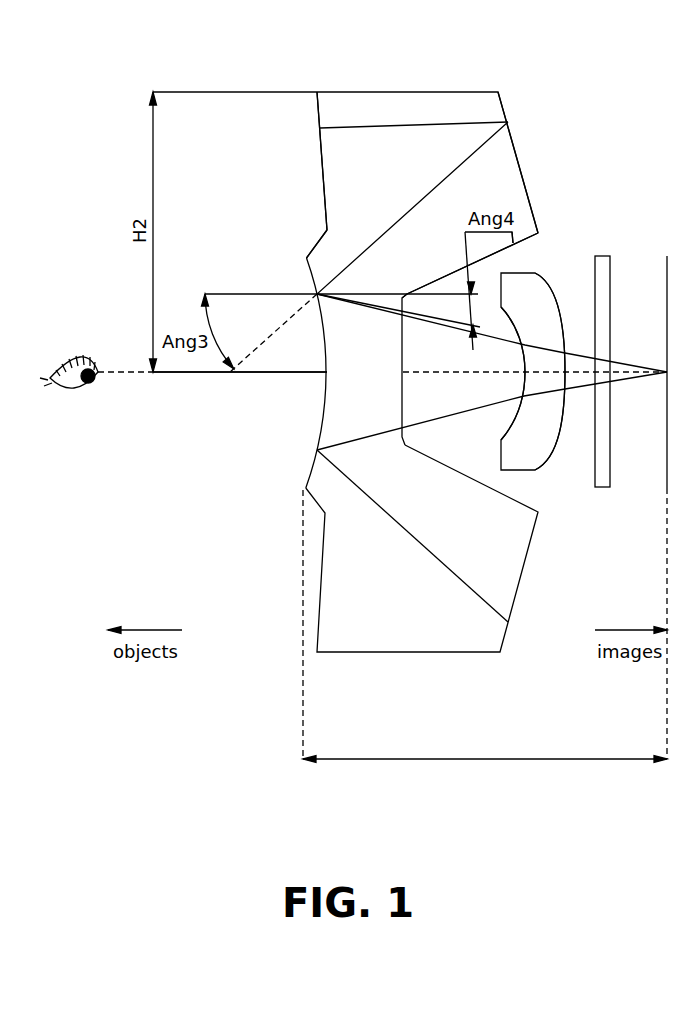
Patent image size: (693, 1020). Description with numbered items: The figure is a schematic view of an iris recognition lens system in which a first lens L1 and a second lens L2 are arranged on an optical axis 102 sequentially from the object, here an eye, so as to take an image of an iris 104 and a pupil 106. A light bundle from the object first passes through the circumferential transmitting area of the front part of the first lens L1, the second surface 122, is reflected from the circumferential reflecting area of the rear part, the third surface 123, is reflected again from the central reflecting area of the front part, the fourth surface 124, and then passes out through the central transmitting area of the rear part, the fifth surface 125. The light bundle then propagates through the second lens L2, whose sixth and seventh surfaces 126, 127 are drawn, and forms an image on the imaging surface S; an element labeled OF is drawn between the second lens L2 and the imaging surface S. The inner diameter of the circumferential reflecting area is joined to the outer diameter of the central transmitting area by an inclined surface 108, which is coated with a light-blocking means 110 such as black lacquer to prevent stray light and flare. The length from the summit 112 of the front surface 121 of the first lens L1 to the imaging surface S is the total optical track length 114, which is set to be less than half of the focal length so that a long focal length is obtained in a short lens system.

The optical axis 102 is at (188, 373).
The iris 104 is at (85, 386).
The pupil 106 is at (90, 355).
The inclined surface 108 is at (530, 240).
The light-blocking means 110 is at (512, 232).
The summit 112 is at (306, 488).
The total optical track length 114 is at (367, 759).
The front surface 121 is at (323, 417).
The second surface 122 is at (318, 117).
The third surface 123 is at (500, 110).
The fourth surface 124 is at (308, 255).
The fifth surface 125 is at (402, 380).
The sixth surface 126 is at (510, 422).
The seventh surface 127 is at (545, 283).
The first lens L1 is at (517, 152).
The second lens L2 is at (538, 470).
The optical filter OF is at (605, 488).
The imaging surface S is at (667, 300).